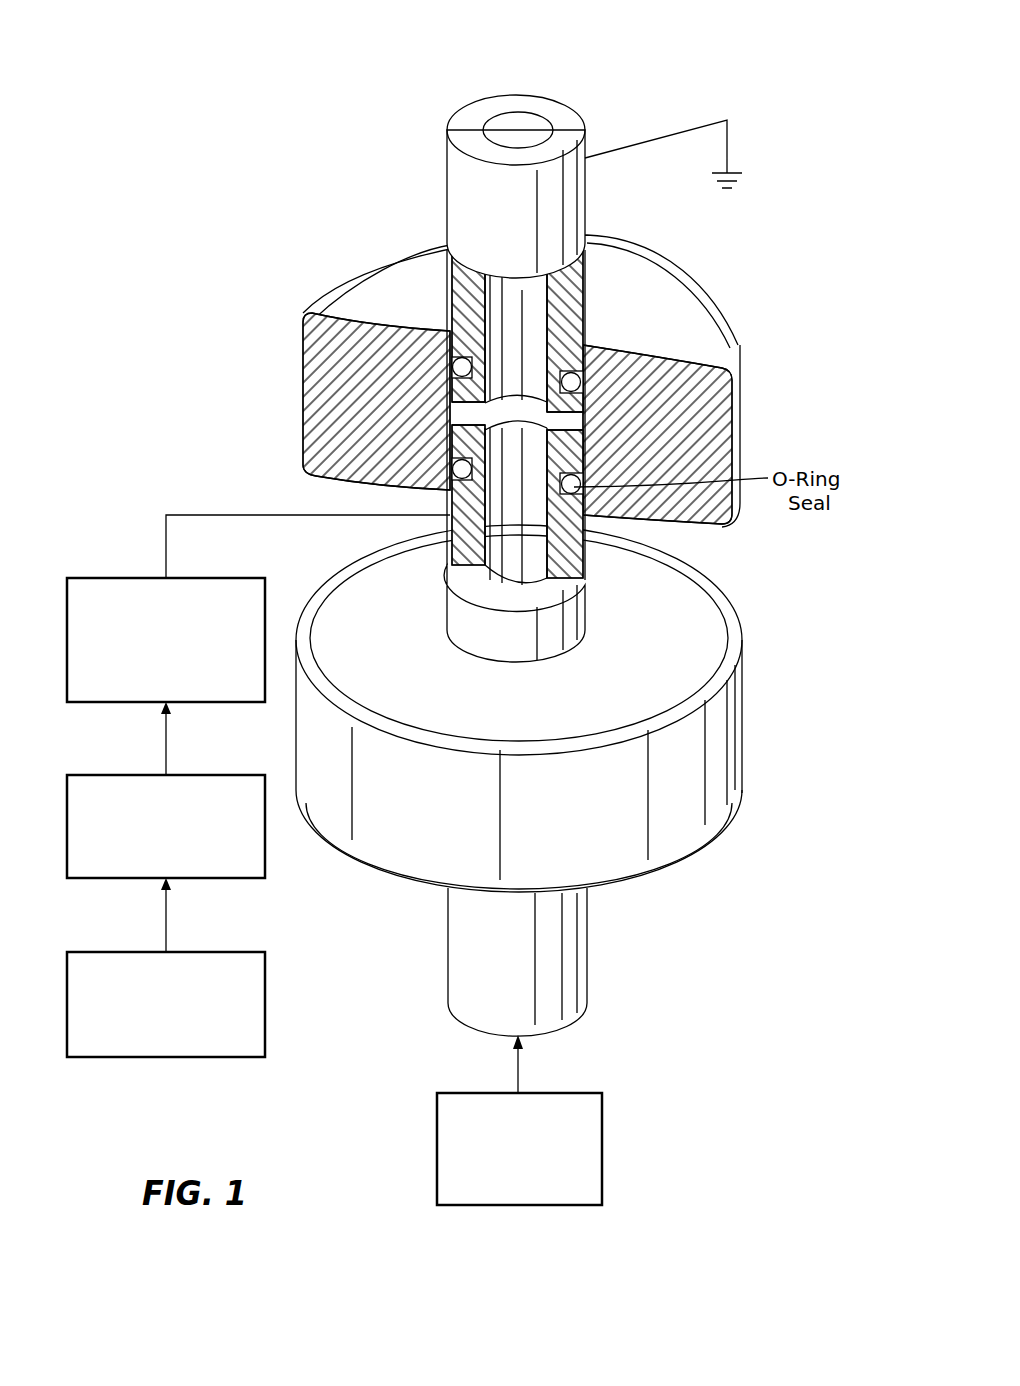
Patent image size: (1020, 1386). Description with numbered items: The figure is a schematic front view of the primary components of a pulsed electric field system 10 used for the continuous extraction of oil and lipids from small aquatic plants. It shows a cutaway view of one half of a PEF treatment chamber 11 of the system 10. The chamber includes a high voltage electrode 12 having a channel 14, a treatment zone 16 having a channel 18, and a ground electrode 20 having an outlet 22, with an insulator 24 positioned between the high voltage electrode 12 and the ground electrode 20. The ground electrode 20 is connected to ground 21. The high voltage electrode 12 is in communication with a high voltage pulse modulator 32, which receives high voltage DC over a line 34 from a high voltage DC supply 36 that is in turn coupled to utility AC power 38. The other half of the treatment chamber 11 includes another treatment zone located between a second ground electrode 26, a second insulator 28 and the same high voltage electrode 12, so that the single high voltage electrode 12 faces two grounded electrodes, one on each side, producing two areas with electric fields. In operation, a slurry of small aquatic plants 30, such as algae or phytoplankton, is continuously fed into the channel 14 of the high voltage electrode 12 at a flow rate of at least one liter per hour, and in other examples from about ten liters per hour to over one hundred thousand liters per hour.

The pulsed electric field system 10 is at (335, 96).
The PEF treatment chamber 11 is at (778, 323).
The high voltage electrode 12 is at (450, 506).
The channel 14 is at (538, 546).
The treatment zone 16 is at (468, 412).
The channel 18 is at (580, 428).
The ground electrode 20 is at (463, 178).
The ground 21 is at (727, 157).
The outlet 22 is at (519, 128).
The insulator 24 is at (706, 396).
The ground electrode 26 is at (463, 961).
The insulator 28 is at (720, 726).
The slurry of small aquatic plants 30 is at (507, 1121).
The high voltage pulse modulator 32 is at (155, 691).
The line 34 is at (166, 746).
The high voltage DC supply 36 is at (155, 864).
The utility AC power 38 is at (155, 1044).